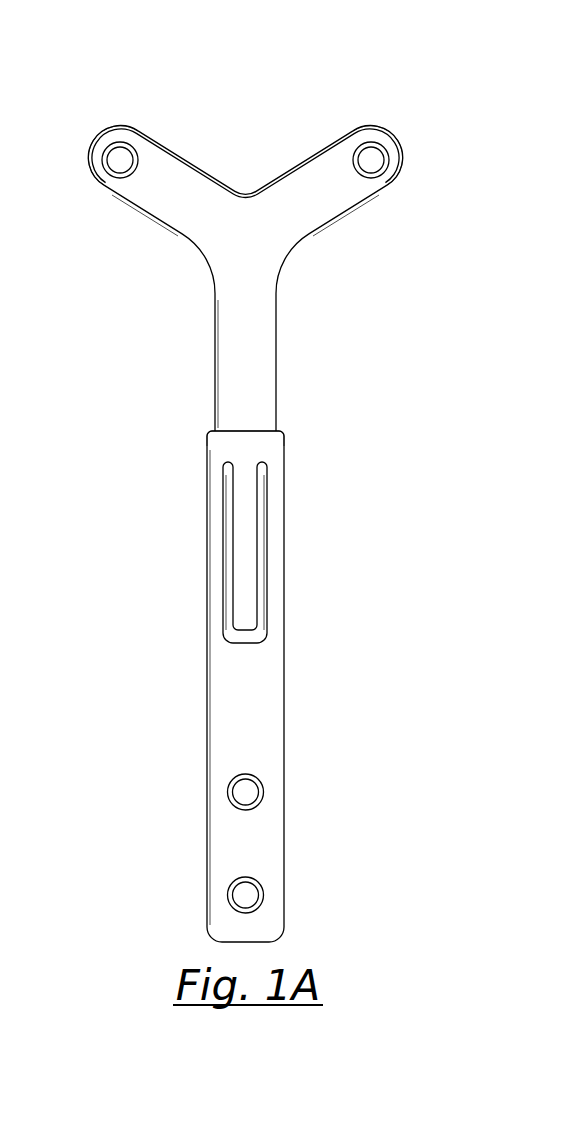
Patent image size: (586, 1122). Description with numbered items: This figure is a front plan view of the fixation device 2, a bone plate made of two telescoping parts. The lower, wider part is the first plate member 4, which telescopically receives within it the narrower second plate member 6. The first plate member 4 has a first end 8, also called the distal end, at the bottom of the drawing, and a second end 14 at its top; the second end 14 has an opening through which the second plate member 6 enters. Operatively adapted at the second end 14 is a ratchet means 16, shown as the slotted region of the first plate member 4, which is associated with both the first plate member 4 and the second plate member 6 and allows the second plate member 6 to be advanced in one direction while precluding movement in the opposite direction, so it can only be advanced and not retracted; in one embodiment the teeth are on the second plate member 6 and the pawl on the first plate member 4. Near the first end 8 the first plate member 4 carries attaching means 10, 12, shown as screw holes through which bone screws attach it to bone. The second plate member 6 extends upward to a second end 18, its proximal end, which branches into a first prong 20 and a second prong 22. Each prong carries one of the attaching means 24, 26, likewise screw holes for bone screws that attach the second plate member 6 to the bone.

The fixation device 2 is at (271, 501).
The first plate member 4 is at (251, 668).
The second plate member 6 is at (253, 332).
The first end 8 is at (250, 831).
The attaching means 10 is at (250, 790).
The attaching means 12 is at (248, 897).
The second end 14 is at (272, 445).
The ratchet means 16 is at (245, 597).
The second end 18 is at (244, 200).
The first prong 20 is at (100, 141).
The second prong 22 is at (425, 174).
The attaching means 24 is at (120, 167).
The attaching means 26 is at (373, 168).